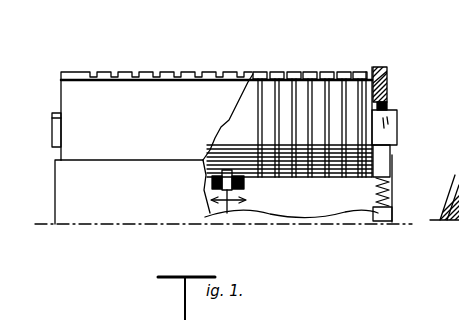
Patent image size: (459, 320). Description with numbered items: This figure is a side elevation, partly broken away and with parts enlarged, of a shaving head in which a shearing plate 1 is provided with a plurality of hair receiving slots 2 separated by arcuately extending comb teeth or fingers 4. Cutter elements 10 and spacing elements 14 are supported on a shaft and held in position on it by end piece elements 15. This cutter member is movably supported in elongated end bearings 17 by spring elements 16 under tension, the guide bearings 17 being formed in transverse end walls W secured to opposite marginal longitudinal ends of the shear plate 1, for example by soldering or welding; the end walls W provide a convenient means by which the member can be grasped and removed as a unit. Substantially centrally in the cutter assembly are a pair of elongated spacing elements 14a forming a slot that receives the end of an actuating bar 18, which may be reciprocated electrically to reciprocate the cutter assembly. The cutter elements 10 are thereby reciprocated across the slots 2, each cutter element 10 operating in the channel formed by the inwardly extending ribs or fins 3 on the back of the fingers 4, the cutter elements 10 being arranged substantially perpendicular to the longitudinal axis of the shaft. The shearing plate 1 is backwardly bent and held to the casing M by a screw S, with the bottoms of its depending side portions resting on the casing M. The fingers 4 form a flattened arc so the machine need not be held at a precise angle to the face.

The shearing plate 1 is at (82, 98).
The hair receiving slots 2 is at (107, 72).
The ribs or fins 3 is at (337, 72).
The comb teeth or fingers 4 is at (151, 72).
The cutter elements 10 is at (277, 132).
The spacing elements 14 is at (350, 101).
The elongated spacing elements 14a is at (216, 198).
The end piece elements 15 is at (383, 128).
The spring elements 16 is at (387, 193).
The elongated end bearings 17 is at (366, 100).
The actuating bar 18 is at (213, 218).
The transverse end walls W is at (384, 95).
The casing M is at (90, 198).
The screw S is at (455, 175).